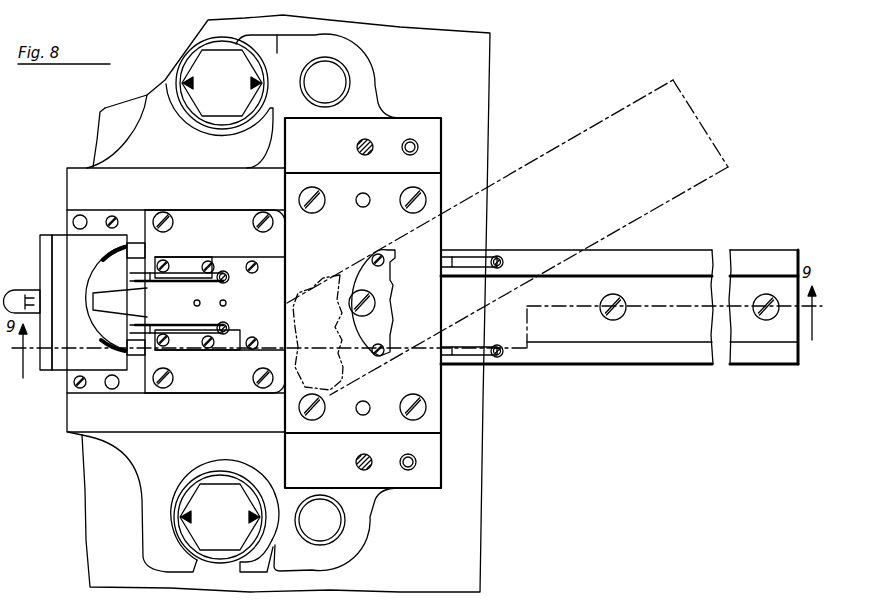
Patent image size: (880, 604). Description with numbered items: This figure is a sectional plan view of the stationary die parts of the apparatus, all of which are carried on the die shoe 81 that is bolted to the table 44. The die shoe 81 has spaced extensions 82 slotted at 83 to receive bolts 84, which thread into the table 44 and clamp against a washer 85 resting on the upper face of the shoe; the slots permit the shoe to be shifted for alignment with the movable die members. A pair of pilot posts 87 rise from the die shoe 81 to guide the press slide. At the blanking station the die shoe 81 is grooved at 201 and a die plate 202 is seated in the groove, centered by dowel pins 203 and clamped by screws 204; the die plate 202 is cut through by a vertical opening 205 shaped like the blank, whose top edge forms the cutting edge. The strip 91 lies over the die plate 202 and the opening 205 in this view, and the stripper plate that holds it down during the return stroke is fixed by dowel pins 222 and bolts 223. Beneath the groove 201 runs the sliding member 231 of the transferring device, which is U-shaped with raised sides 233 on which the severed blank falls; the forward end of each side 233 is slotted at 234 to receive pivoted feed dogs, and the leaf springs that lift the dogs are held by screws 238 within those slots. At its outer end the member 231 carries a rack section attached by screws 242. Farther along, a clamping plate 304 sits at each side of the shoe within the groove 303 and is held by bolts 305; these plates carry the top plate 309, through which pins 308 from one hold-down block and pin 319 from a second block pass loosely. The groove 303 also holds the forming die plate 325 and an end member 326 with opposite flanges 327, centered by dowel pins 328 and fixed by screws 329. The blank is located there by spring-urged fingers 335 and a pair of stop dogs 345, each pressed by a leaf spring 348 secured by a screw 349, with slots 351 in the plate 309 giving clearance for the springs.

The table 44 is at (478, 458).
The die shoe 81 is at (176, 300).
The extensions 82 is at (173, 558).
The slots 83 is at (200, 564).
The bolts 84 is at (222, 300).
The washer 85 is at (182, 533).
The pilot posts 87 is at (333, 77).
The strip 91 is at (660, 86).
The groove 201 is at (338, 167).
The die plate 202 is at (428, 400).
The dowel pins 203 is at (368, 206).
The screws 204 is at (425, 199).
The vertical opening 205 is at (361, 272).
The dowel pins 222 is at (368, 143).
The bolts 223 is at (413, 142).
The sliding member 231 is at (722, 303).
The raised sides 233 is at (619, 307).
The slots 234 is at (473, 250).
The screws 238 is at (383, 262).
The screws 242 is at (620, 312).
The groove 303 is at (256, 206).
The clamping plate 304 is at (179, 300).
The bolts 305 is at (255, 300).
The pins 308 is at (227, 304).
The top plate 309 is at (268, 348).
The pin 319 is at (195, 305).
The die plate 325 is at (122, 272).
The end member 326 is at (63, 236).
The flanges 327 is at (102, 209).
The dowel pins 328 is at (78, 216).
The screws 329 is at (116, 216).
The fingers 335 is at (126, 353).
The stop dogs 345 is at (156, 278).
The leaf spring 348 is at (190, 276).
The screw 349 is at (230, 278).
The slots 351 is at (190, 338).